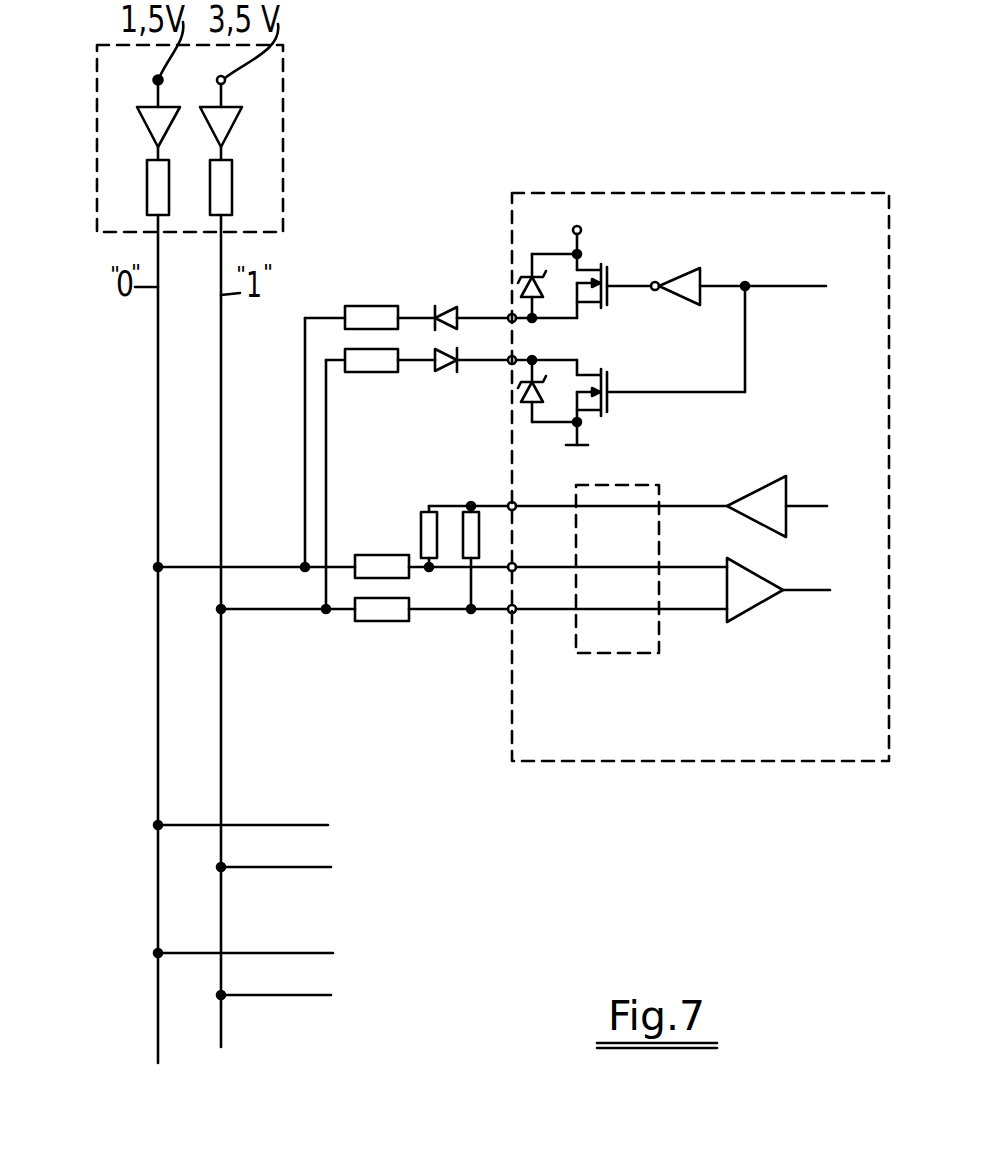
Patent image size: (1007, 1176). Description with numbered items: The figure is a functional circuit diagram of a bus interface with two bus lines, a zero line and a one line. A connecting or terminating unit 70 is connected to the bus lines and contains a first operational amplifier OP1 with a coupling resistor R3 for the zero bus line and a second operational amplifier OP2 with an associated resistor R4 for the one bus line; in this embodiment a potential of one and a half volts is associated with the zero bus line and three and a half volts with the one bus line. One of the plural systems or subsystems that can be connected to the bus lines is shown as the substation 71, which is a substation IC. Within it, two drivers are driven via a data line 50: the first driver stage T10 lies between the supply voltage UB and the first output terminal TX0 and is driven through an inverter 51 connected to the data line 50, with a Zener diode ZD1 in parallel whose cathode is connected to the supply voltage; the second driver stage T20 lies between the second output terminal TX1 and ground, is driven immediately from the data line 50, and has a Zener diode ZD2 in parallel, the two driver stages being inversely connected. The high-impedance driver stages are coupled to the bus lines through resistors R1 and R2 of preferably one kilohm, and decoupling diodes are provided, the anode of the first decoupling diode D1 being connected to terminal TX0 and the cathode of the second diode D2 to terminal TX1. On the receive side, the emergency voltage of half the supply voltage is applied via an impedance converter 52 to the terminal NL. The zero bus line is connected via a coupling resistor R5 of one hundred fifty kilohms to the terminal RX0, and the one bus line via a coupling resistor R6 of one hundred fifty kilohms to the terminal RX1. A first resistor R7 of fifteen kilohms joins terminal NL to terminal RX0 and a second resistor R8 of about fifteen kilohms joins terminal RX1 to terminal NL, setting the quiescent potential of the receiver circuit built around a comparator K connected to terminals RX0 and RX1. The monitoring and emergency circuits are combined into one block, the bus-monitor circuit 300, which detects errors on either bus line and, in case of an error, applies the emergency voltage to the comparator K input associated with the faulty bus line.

The first operational amplifier OP1 is at (138, 120).
The second operational amplifier OP2 is at (228, 127).
The connecting or terminating unit 70 is at (276, 76).
The coupling resistor R3 is at (147, 182).
The associated resistor R4 is at (228, 188).
The resistor R1 is at (362, 307).
The first decoupling diode D1 is at (433, 307).
The first output terminal TX0 is at (507, 313).
The Zener diode ZD1 is at (530, 270).
The supply voltage UB is at (582, 197).
The first driver stage T10 is at (610, 268).
The inverter 51 is at (700, 273).
The data line 50 is at (763, 284).
The substation 71 is at (842, 203).
The resistor R2 is at (385, 372).
The second output terminal TX1 is at (509, 364).
The second decoupling diode D2 is at (438, 369).
The Zener diode ZD2 is at (528, 406).
The second driver stage T20 is at (610, 400).
The impedance converter 52 is at (759, 490).
The first resistor R7 is at (424, 527).
The second resistor R8 is at (464, 530).
The terminal NL is at (510, 501).
The coupling resistor R5 is at (390, 562).
The terminal RX0 is at (518, 562).
The coupling resistor R6 is at (368, 619).
The terminal RX1 is at (509, 614).
The bus-monitor circuit 300 is at (606, 648).
The comparator K is at (750, 602).